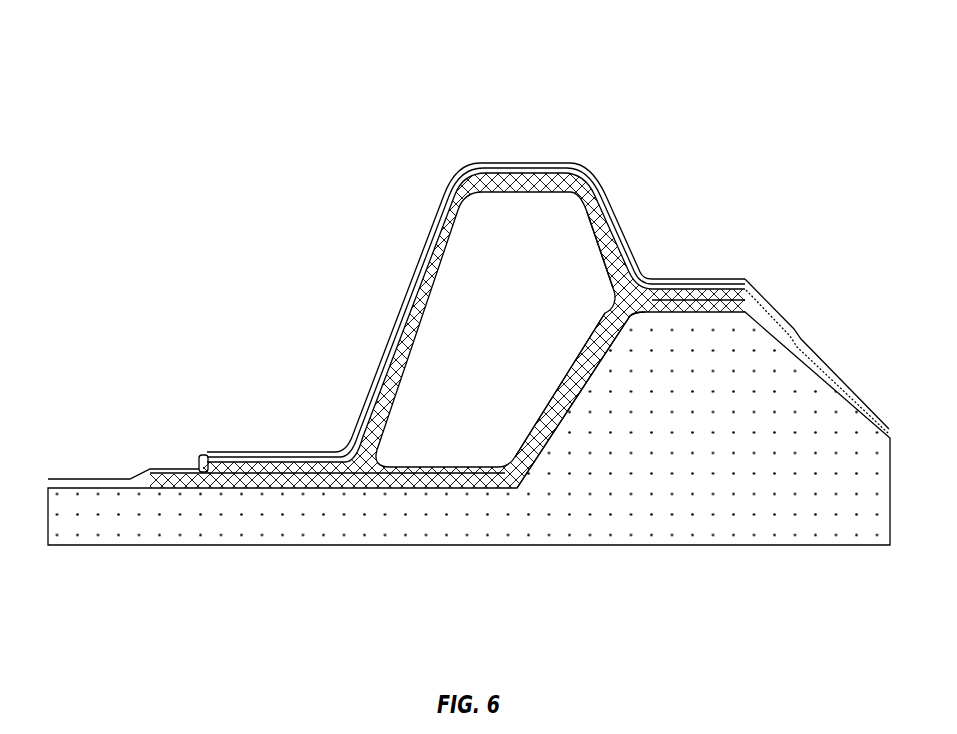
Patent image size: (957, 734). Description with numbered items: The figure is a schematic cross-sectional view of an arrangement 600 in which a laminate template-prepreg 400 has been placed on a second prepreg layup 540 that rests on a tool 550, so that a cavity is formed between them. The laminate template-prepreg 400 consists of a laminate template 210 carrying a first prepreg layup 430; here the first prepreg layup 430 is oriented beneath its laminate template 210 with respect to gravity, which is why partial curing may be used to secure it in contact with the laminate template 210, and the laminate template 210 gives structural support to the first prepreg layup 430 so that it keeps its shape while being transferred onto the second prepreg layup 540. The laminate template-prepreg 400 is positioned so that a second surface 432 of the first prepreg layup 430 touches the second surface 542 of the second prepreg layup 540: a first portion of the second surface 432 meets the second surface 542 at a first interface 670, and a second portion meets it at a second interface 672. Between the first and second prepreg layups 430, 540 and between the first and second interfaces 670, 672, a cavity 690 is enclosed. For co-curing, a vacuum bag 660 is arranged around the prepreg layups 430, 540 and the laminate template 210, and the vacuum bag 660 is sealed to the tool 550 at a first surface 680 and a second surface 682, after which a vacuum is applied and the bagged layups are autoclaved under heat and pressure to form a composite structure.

The display device assembly 600 is at (96, 76).
The laminate template 210 is at (418, 256).
The vacuum bag 660 is at (542, 158).
The first prepreg layup 430 is at (598, 202).
The second surface 432 is at (598, 255).
The cavity 690 is at (462, 391).
The second surface 542 is at (597, 337).
The second prepreg layup 540 is at (570, 392).
The tool 550 is at (615, 499).
The first interface 670 is at (265, 467).
The second interface 672 is at (694, 293).
The first surface 680 is at (76, 483).
The second surface 682 is at (851, 393).
The laminate template-prepreg 400 is at (197, 467).